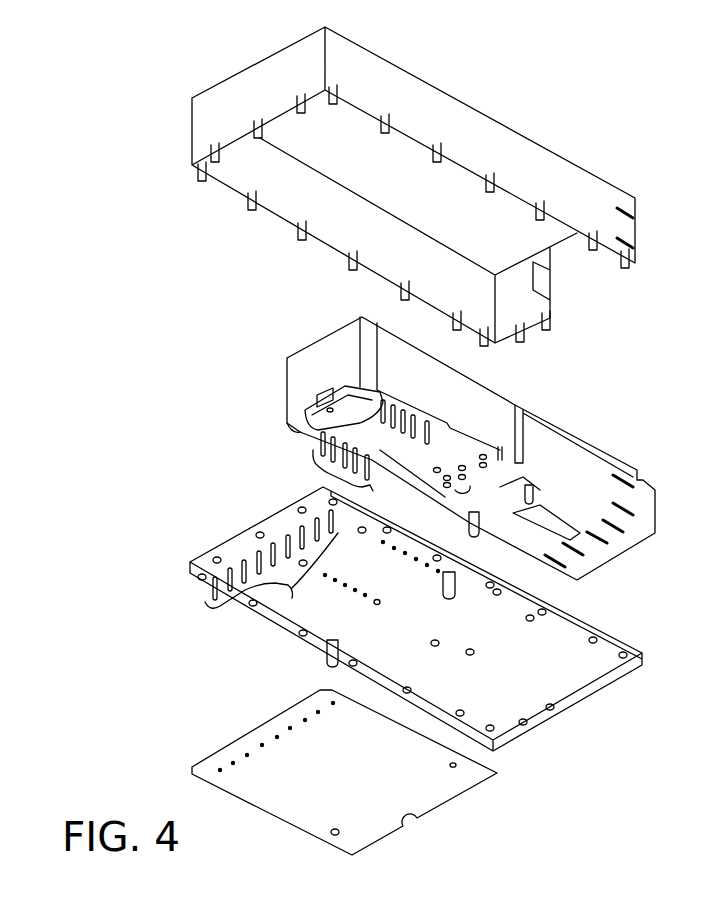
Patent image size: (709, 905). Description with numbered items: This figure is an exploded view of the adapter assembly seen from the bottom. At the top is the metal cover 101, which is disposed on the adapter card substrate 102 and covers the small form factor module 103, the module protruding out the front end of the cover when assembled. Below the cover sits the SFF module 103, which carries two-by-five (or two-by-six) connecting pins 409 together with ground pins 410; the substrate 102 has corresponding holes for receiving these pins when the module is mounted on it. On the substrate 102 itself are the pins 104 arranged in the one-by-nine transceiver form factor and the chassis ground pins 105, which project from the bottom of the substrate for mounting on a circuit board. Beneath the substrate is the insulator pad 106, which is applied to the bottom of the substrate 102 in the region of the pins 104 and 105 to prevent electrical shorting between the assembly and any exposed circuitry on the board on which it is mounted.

The metal cover 101 is at (220, 118).
The adapter card substrate 102 is at (587, 685).
The small form factor (SFF) module 103 is at (471, 448).
The 1×9 form factor pins 104 is at (292, 594).
The chassis ground pins 105 is at (449, 606).
The insulator pad 106 is at (427, 798).
The connecting pins 409 is at (313, 476).
The ground pins 410 is at (497, 537).